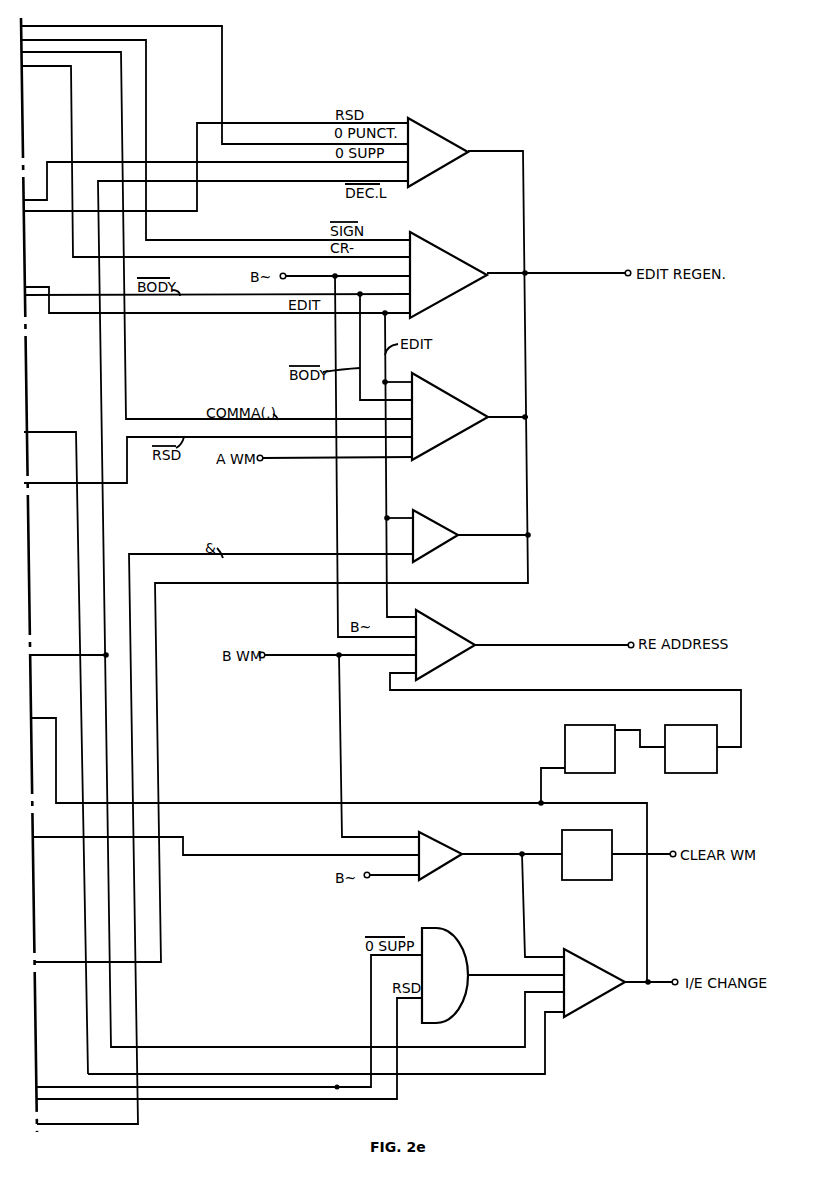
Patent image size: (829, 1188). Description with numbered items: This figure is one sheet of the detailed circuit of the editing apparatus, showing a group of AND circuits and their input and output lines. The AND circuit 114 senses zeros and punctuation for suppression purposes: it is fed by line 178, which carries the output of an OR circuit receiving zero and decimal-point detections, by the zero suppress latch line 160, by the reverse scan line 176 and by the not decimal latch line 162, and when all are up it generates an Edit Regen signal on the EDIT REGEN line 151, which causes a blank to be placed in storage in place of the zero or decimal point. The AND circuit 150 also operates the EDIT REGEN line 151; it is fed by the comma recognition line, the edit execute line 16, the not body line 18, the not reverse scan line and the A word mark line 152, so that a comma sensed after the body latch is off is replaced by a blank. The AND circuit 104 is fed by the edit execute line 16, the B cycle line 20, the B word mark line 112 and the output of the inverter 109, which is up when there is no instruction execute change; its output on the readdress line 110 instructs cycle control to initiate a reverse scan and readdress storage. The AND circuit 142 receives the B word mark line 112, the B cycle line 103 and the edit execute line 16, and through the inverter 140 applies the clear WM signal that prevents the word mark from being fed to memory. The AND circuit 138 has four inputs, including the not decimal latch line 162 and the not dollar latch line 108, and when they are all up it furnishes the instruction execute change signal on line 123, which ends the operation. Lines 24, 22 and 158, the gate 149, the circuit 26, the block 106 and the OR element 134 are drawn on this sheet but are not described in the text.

The line 178 is at (217, 25).
The reverse scan line 176 is at (316, 124).
The zero suppress latch line 160 is at (293, 163).
The not decimal latch line 162 is at (324, 181).
The AND circuit 114 is at (448, 143).
The SIGN line 24 is at (184, 241).
The CR- line 22 is at (188, 258).
The B cycle line 20 is at (318, 276).
The not body line 18 is at (249, 295).
The edit execute line 16 is at (281, 312).
The AND gate 149 is at (456, 256).
The EDIT REGEN line 151 is at (581, 277).
The AND circuit 150 is at (451, 400).
The A word mark line 152 is at (406, 457).
The AND gate 26 is at (437, 528).
The AND circuit 104 is at (445, 632).
The readdress line 110 is at (571, 644).
The B word mark line 112 is at (264, 658).
The P block 106 is at (577, 725).
The inverter 109 is at (700, 725).
The instruction execute change line 123 is at (273, 804).
The AND circuit 142 is at (442, 846).
The inverter 140 is at (575, 824).
The B cycle line 103 is at (395, 875).
The OR gate 134 is at (442, 939).
The AND circuit 138 is at (577, 965).
The not dollar latch line 108 is at (476, 1074).
The 0 SUPP line 158 is at (336, 1087).